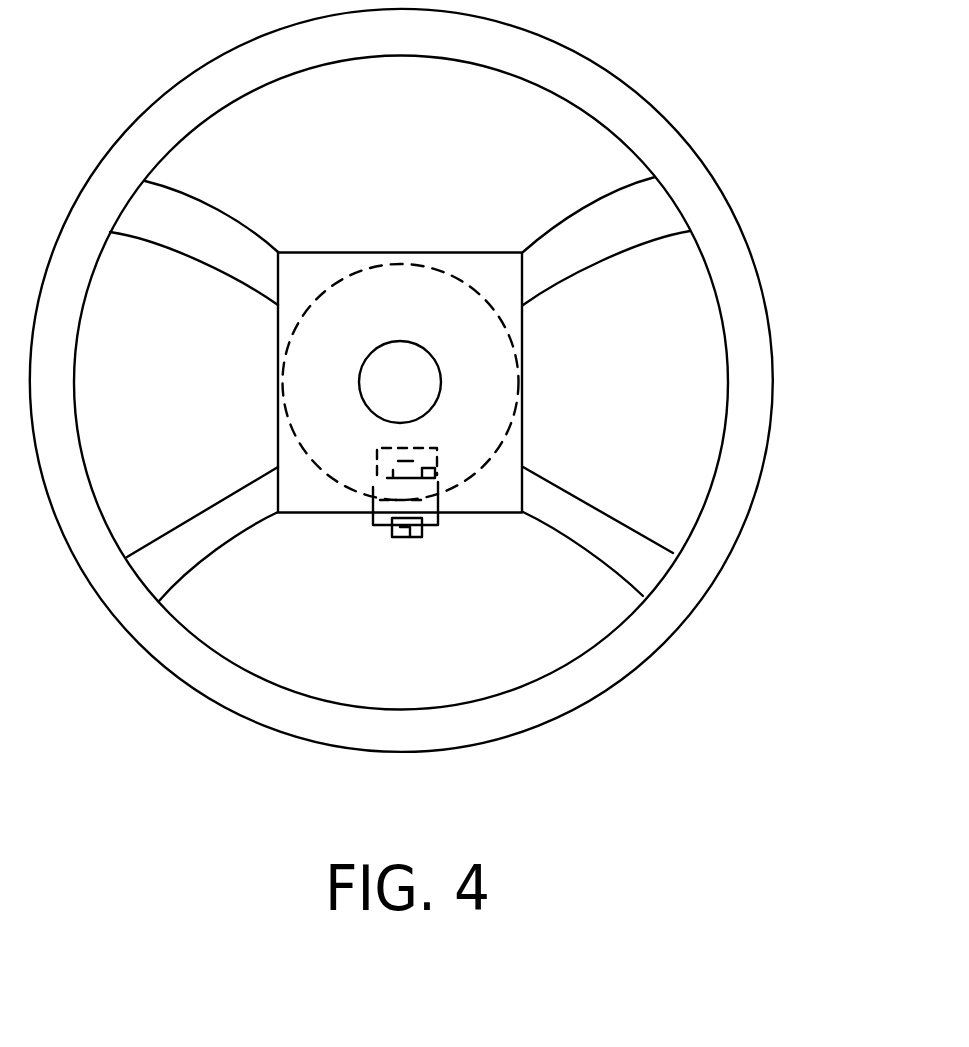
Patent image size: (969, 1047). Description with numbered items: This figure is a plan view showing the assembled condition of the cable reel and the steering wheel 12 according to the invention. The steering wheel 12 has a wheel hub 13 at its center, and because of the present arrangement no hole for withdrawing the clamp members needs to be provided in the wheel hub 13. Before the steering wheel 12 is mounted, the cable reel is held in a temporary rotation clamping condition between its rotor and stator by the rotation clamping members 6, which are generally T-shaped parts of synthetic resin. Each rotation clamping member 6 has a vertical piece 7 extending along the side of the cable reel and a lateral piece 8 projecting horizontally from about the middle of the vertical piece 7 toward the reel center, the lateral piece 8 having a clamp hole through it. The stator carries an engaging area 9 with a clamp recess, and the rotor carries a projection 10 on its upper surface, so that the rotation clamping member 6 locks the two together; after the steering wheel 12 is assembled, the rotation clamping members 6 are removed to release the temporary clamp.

The steering wheel 12 is at (762, 219).
The wheel hub 13 is at (518, 321).
The lateral piece 8 is at (441, 468).
The projection 10 is at (372, 485).
The engaging area 9 is at (372, 525).
The rotation clamping member 6 is at (447, 522).
The vertical piece 7 is at (410, 537).